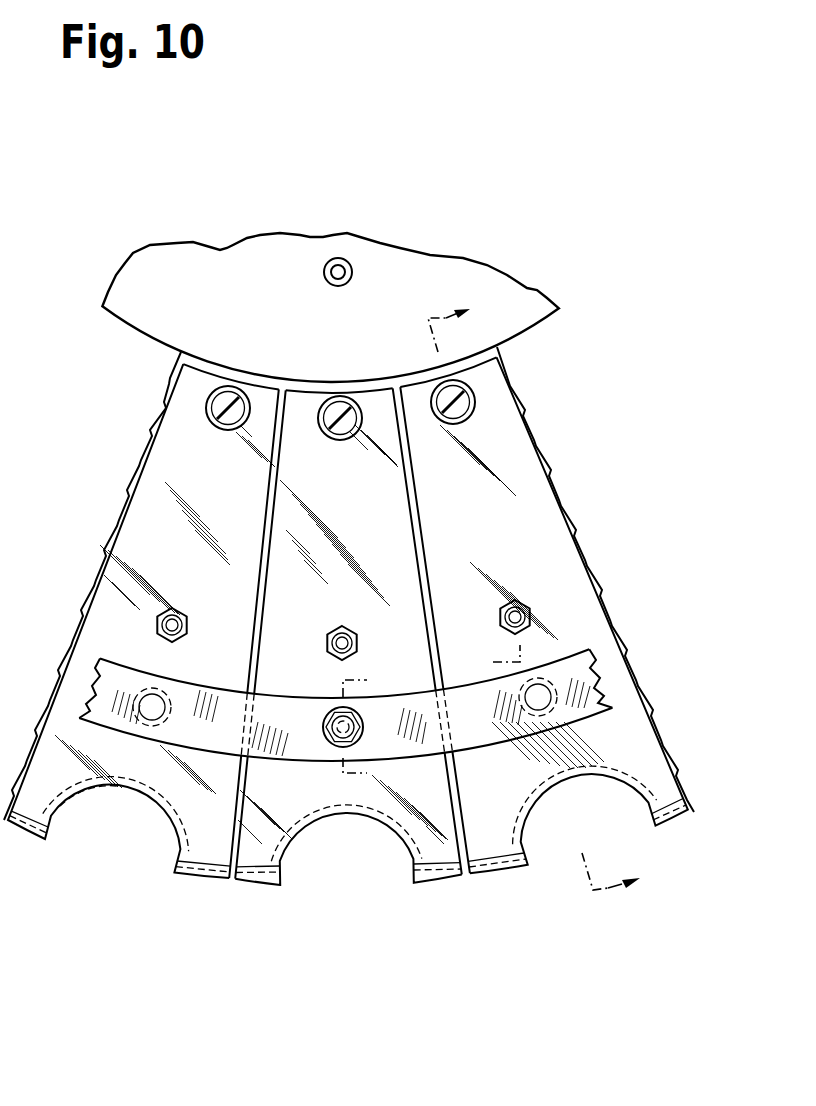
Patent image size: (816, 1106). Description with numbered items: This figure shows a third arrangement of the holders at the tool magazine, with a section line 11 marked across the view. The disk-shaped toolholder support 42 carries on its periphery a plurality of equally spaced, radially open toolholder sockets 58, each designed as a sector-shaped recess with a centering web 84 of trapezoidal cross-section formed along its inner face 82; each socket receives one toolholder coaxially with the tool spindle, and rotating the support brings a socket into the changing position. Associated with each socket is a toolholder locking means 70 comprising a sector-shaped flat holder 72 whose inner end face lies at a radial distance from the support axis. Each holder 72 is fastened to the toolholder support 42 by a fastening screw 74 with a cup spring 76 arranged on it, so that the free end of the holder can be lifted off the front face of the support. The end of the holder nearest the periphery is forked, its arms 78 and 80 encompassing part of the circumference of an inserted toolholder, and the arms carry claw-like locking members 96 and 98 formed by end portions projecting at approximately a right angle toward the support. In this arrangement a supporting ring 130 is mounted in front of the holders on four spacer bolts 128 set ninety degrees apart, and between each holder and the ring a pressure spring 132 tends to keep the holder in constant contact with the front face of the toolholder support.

The section line 11- 11 is at (491, 610).
The toolholder support 42 is at (487, 355).
The toolholder socket 58 is at (345, 838).
The toolholder locking means 70 is at (378, 423).
The holder 72 is at (218, 501).
The fastening screw 74 is at (342, 430).
The cup spring 76 is at (318, 417).
The fork arm 78 is at (262, 838).
The fork arm 80 is at (433, 833).
The inner face 82 is at (72, 805).
The centering web 84 is at (160, 803).
The claw-like locking member 96 is at (260, 872).
The claw-like locking member 98 is at (427, 870).
The spacer bolt 128 is at (330, 733).
The supporting ring 130 is at (288, 700).
The pressure spring 132 is at (522, 713).